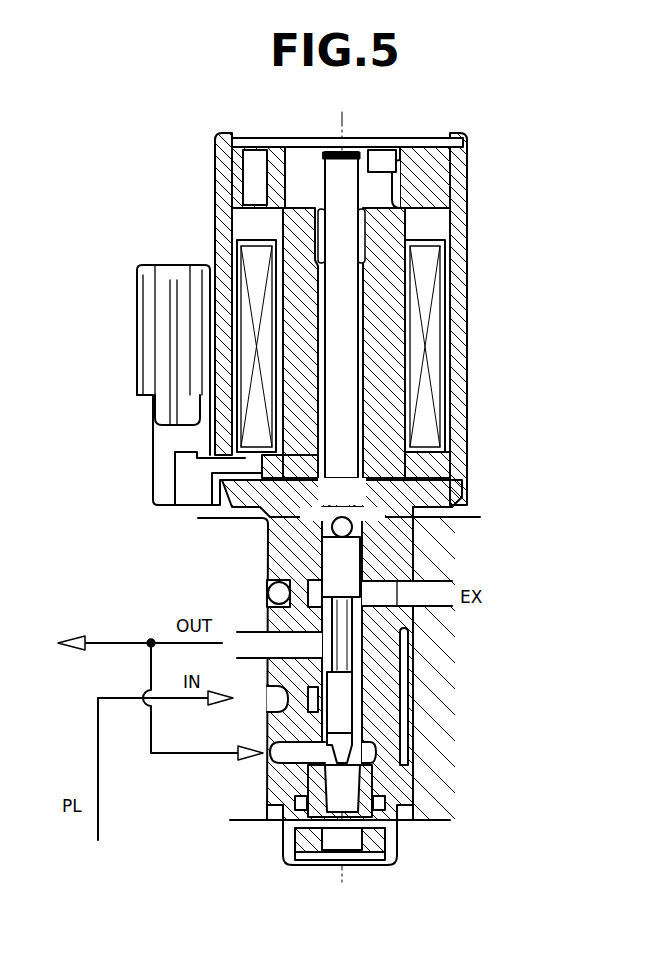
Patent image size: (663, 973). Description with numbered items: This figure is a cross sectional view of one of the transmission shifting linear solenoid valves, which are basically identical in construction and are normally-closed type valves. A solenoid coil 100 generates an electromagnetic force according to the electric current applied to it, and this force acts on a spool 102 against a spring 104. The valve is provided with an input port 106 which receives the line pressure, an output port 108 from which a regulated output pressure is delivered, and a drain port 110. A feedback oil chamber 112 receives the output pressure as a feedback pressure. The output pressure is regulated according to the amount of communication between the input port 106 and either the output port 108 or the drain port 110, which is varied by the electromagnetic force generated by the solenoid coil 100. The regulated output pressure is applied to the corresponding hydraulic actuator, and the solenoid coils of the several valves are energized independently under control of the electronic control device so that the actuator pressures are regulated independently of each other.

The solenoid coil 100 is at (433, 340).
The spool 102 is at (348, 706).
The spring 104 is at (312, 866).
The input port 106 is at (236, 708).
The output port 108 is at (242, 637).
The drain port 110 is at (430, 580).
The feedback oil chamber 112 is at (362, 750).